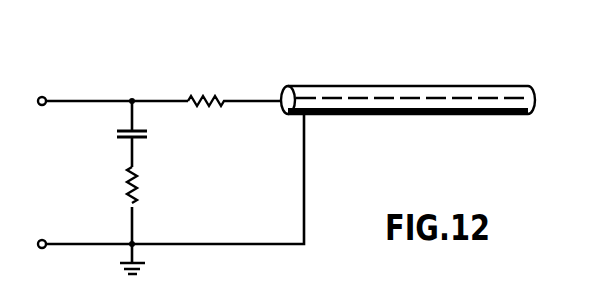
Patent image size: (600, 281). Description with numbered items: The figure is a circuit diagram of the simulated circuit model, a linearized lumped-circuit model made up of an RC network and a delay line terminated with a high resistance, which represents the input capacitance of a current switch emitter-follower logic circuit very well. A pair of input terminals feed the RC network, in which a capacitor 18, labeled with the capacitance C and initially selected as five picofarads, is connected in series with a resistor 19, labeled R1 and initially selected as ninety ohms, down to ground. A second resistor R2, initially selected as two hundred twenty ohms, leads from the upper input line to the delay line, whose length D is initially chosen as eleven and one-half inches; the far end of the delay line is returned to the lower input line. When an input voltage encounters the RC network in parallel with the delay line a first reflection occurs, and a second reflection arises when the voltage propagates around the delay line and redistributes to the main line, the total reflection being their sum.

The capacitor 18 is at (114, 128).
The resistor 19 is at (148, 185).
The resistor R1 is at (109, 193).
The resistor R2 is at (216, 89).
The capacitor C is at (157, 121).
The delay line length D is at (526, 80).